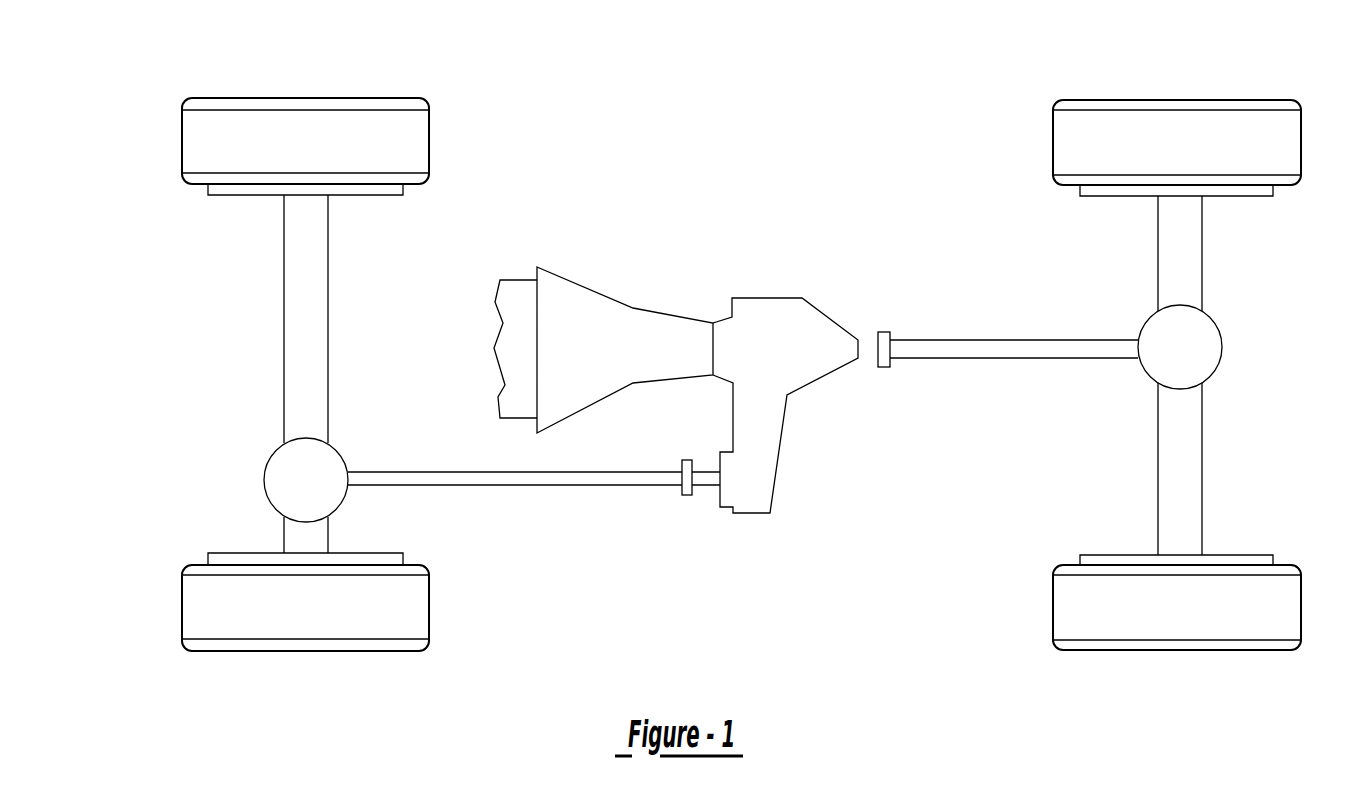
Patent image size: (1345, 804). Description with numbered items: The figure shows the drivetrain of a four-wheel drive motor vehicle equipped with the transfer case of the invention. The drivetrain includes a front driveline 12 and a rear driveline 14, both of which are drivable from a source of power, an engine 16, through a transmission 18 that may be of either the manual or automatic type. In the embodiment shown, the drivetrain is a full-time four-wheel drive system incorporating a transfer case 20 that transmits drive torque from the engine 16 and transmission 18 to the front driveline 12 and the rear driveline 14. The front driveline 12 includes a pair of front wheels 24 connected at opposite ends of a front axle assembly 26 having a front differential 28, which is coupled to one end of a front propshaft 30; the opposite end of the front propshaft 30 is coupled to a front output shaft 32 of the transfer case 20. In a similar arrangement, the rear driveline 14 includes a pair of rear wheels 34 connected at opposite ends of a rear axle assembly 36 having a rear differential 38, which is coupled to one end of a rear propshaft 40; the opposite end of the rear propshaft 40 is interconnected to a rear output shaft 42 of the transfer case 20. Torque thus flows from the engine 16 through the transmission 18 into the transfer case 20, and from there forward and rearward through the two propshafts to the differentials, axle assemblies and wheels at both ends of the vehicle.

The front driveline 12 is at (327, 344).
The rear driveline 14 is at (1154, 338).
The engine 16 is at (513, 322).
The transmission 18 is at (637, 368).
The transfer case 20 is at (818, 382).
The front wheels 24 is at (242, 137).
The front axle assembly 26 is at (300, 270).
The front differential 28 is at (268, 460).
The front propshaft 30 is at (640, 482).
The front output shaft 32 is at (705, 483).
The rear wheels 34 is at (1125, 157).
The rear axle assembly 36 is at (1172, 247).
The rear differential 38 is at (1195, 342).
The rear propshaft 40 is at (1073, 350).
The rear output shaft 42 is at (868, 347).